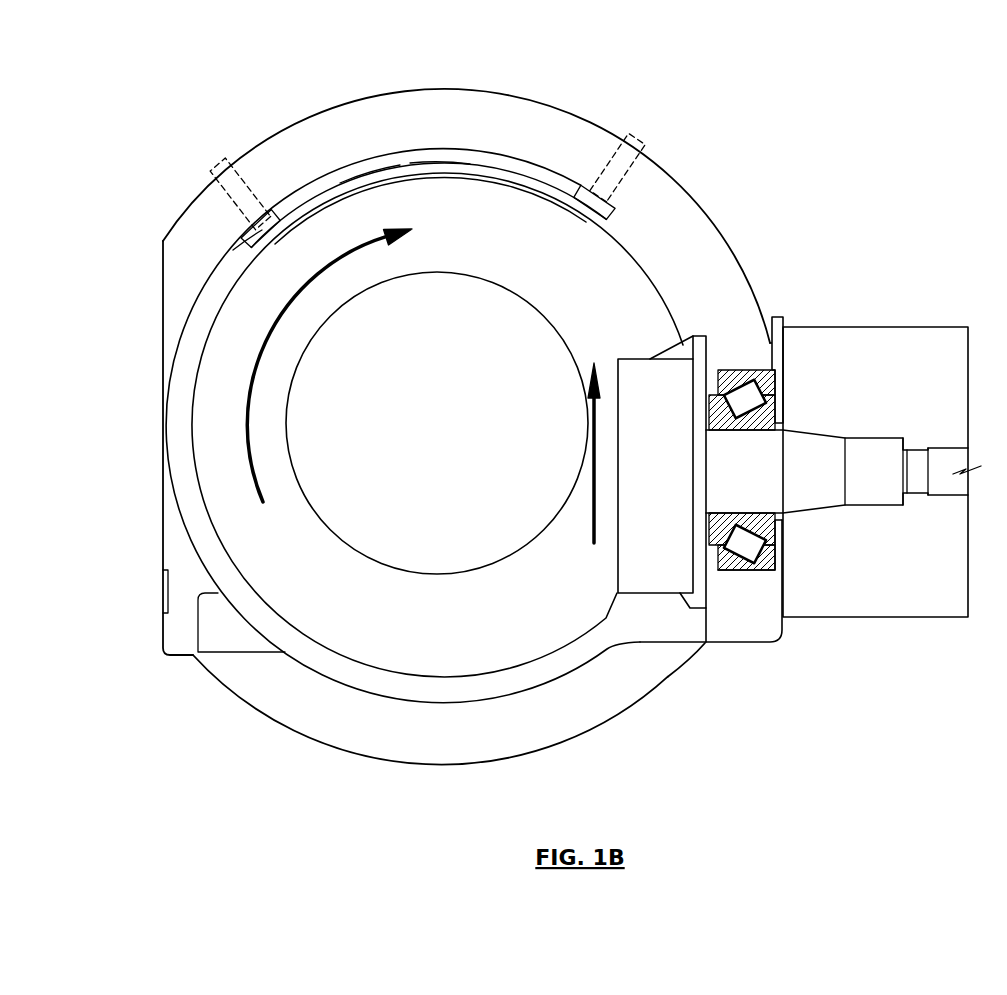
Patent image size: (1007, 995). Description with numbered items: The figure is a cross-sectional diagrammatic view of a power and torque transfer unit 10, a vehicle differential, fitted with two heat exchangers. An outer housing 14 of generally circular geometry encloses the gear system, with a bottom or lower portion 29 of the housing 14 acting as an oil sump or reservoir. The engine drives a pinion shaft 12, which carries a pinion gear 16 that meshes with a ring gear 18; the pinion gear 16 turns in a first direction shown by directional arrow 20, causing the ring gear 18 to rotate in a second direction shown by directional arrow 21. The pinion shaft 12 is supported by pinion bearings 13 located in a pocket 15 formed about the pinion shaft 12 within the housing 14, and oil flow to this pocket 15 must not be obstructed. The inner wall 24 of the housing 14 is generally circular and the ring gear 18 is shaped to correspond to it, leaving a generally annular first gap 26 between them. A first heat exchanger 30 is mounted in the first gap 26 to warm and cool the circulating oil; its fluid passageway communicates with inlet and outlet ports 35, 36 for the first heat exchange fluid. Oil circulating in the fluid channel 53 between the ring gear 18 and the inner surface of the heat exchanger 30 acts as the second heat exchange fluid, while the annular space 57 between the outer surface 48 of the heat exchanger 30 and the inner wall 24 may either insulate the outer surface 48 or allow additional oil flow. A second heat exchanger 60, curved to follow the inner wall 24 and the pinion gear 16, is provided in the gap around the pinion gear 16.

The power and torque transfer unit 10 is at (857, 114).
The pinion shaft 12 is at (810, 492).
The pinion bearings 13 is at (752, 382).
The housing 14 is at (595, 123).
The pocket 15 is at (768, 352).
The pinion gear 16 is at (700, 643).
The ring gear 18 is at (335, 625).
The directional arrow 20 is at (592, 546).
The directional arrow 21 is at (247, 417).
The inner wall 24 is at (520, 157).
The first gap 26 is at (233, 250).
The lower portion 29 is at (363, 690).
The first heat exchanger 30 is at (323, 188).
The inlet port 35 is at (228, 170).
The outlet port 36 is at (645, 131).
The outer surface 48 is at (378, 165).
The fluid channel 53 is at (603, 212).
The annular space 57 is at (441, 150).
The second heat exchanger 60 is at (663, 370).